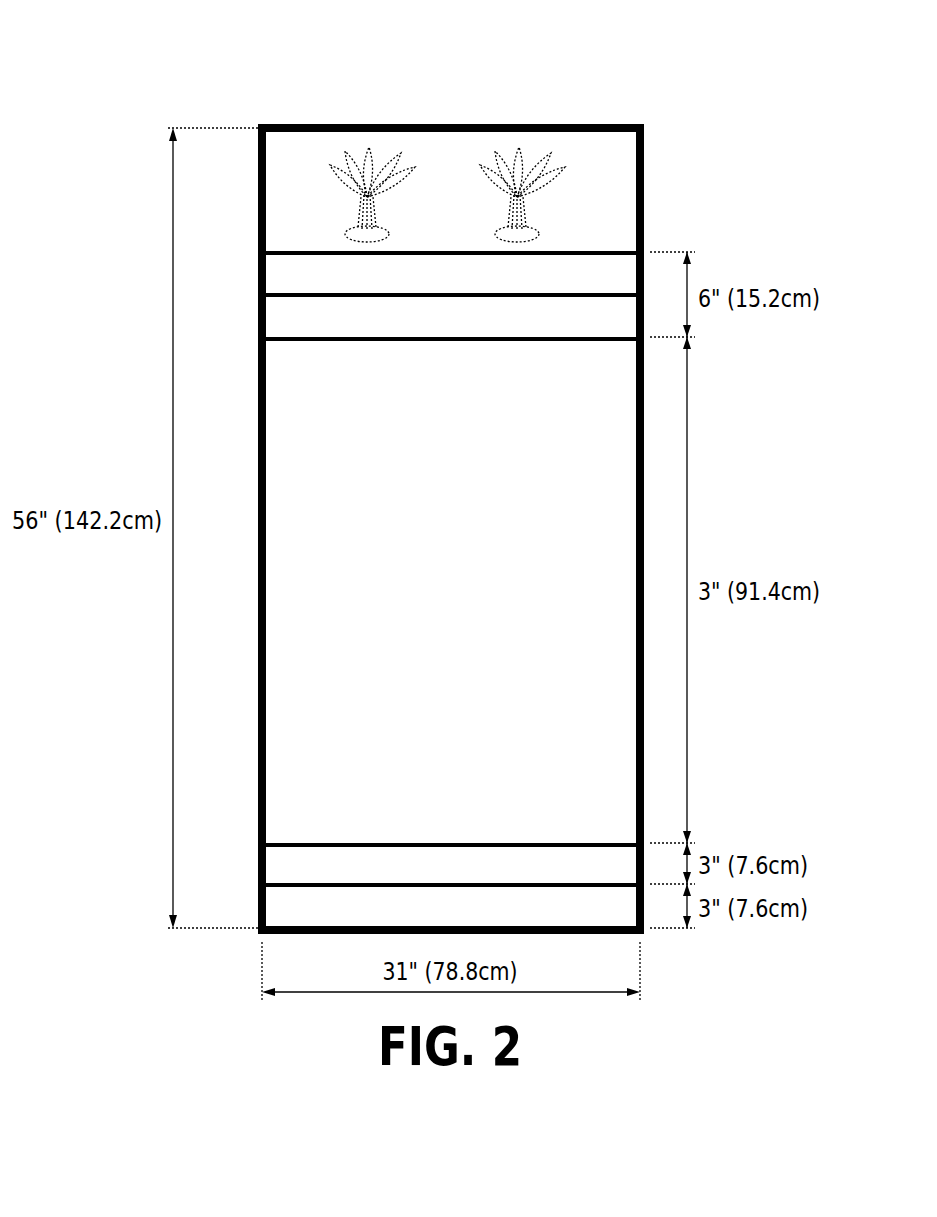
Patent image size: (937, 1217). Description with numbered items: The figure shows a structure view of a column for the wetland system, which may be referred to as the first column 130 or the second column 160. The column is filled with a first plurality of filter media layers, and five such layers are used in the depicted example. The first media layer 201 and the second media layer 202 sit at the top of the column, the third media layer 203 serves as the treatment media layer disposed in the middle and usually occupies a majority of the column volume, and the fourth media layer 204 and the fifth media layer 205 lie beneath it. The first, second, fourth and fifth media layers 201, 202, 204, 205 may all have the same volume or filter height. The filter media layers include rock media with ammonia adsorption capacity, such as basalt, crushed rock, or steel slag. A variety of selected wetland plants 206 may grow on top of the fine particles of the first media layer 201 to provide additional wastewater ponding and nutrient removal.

The first column 130 is at (477, 473).
The second column 160 is at (451, 529).
The first media layer 201 is at (277, 280).
The second media layer 202 is at (277, 324).
The third media layer 203 is at (277, 592).
The fourth media layer 204 is at (277, 870).
The fifth media layer 205 is at (277, 913).
The wetland plants 206 is at (500, 206).